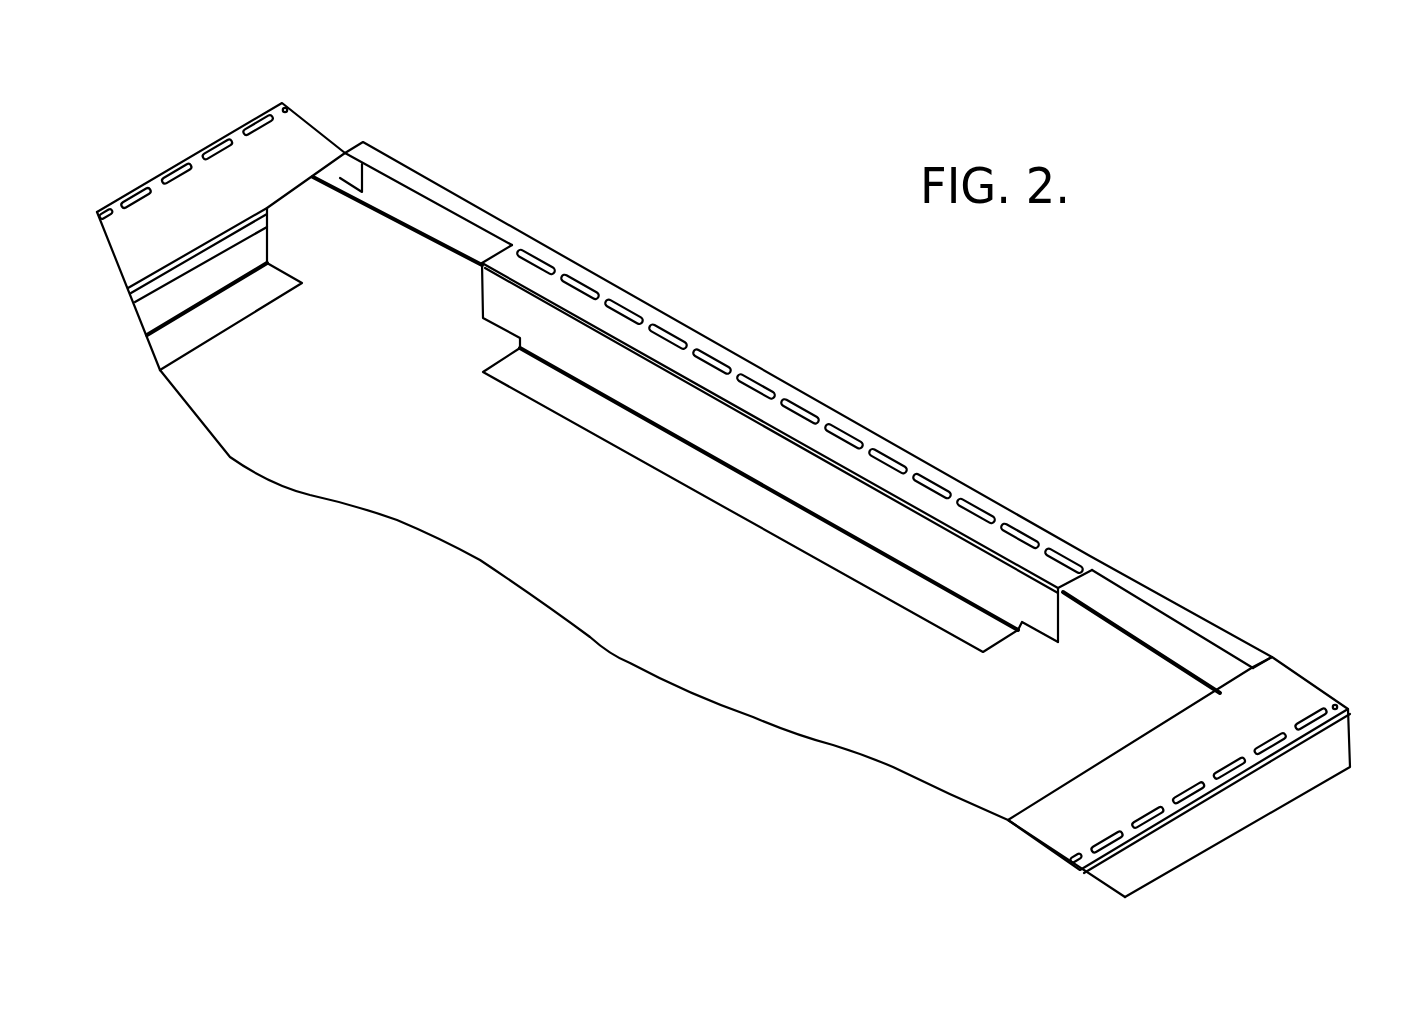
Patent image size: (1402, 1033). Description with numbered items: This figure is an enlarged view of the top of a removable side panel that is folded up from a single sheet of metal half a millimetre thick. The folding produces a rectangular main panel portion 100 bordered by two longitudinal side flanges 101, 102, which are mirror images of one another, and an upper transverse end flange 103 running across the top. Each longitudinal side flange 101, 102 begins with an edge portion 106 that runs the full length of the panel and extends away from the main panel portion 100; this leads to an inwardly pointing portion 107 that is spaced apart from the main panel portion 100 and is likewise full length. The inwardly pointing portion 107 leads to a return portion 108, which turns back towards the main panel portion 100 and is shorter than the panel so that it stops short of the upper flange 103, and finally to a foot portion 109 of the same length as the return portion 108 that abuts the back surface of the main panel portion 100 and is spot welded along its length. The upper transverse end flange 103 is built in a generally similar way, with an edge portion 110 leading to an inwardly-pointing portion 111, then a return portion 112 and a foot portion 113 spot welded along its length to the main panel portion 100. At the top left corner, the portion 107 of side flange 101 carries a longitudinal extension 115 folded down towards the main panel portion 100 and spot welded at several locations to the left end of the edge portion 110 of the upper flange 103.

The main panel portion 100 is at (545, 563).
The longitudinal side flange 101 is at (215, 197).
The longitudinal side flange 102 is at (1222, 810).
The upper transverse end flange 103 is at (1140, 593).
The edge portion 106 is at (1165, 850).
The inwardly pointing portion 107 is at (293, 138).
The return portion 108 is at (237, 262).
The foot portion 109 is at (182, 338).
The edge portion 110 is at (1147, 630).
The inwardly-pointing portion 111 is at (995, 528).
The return portion 112 is at (1040, 612).
The foot portion 113 is at (940, 612).
The longitudinal extension 115 is at (348, 170).